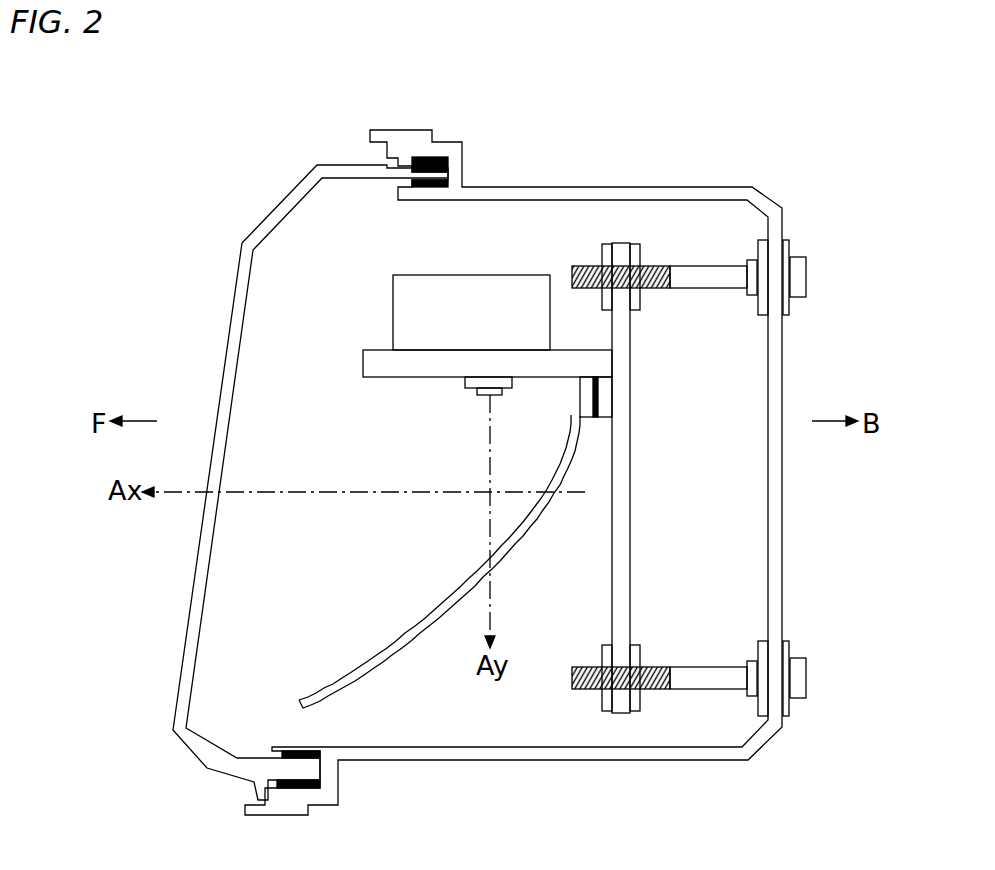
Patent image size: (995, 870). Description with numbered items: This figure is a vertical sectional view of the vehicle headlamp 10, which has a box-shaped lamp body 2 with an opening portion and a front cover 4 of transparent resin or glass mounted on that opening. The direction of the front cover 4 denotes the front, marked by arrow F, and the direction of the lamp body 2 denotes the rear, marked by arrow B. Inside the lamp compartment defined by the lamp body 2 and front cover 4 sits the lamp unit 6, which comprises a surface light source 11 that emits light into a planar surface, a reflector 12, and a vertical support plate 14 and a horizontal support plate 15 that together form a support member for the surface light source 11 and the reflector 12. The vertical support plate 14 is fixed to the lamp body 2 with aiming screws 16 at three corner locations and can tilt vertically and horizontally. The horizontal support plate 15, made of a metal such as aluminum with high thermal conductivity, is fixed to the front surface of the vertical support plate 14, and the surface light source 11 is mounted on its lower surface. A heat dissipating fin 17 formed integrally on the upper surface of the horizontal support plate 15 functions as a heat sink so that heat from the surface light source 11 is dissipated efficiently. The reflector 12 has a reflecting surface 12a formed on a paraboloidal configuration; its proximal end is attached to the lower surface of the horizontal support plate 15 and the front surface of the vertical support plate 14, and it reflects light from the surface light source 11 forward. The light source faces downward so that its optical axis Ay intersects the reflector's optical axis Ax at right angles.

The lamp body 2 is at (778, 550).
The front cover 4 is at (200, 584).
The lamp unit 6 is at (524, 266).
The vehicle headlamp 10 is at (192, 162).
The surface light source 11 is at (473, 390).
The reflector 12 is at (380, 673).
The reflecting surface 12a is at (392, 652).
The vertical support plate 14 is at (625, 491).
The horizontal support plate 15 is at (372, 363).
The aiming screw 16 is at (710, 272).
The heat dissipating fin 17 is at (403, 305).